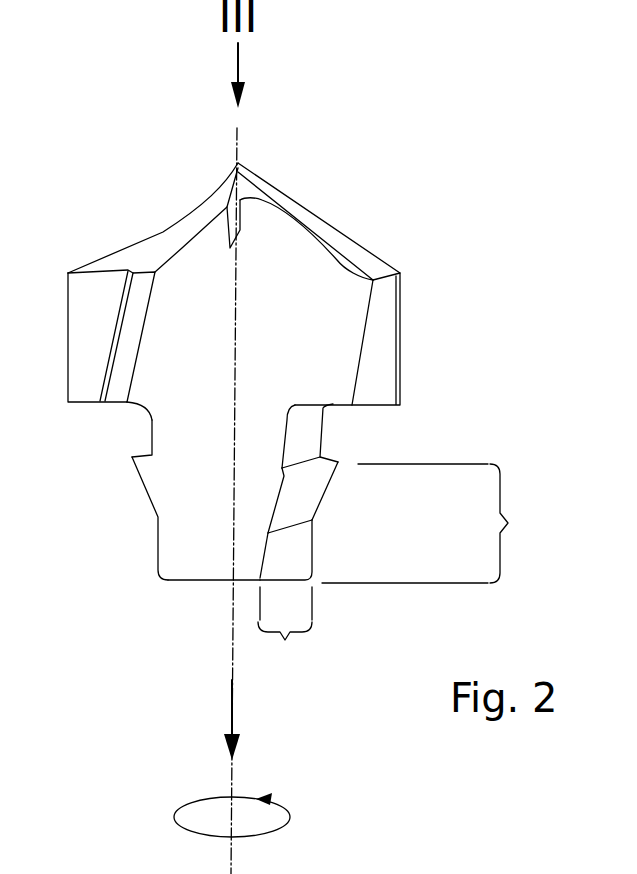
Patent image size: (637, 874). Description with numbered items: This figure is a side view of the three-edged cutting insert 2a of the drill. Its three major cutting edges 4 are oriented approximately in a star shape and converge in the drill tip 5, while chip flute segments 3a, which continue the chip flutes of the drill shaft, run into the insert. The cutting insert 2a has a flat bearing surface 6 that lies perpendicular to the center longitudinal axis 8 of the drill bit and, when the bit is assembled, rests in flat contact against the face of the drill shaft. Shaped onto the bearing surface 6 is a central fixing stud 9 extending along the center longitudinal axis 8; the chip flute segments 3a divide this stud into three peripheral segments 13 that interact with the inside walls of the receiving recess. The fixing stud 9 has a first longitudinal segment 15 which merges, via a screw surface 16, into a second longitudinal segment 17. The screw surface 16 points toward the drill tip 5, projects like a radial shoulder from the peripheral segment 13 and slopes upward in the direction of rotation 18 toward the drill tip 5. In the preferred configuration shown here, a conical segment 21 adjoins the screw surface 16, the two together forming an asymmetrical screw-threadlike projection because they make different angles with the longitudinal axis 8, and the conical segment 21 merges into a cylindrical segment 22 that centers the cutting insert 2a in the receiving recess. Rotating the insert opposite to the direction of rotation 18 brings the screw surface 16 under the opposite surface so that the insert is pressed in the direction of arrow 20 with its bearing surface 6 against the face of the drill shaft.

The cutting insert 2a is at (327, 208).
The chip flute segments 3a is at (305, 367).
The major cutting edges 4 is at (182, 248).
The drill tip 5 is at (239, 161).
The bearing surface 6 is at (127, 404).
The center longitudinal axis 8 is at (235, 323).
The fixing stud 9 is at (322, 538).
The peripheral segments 13 is at (142, 488).
The first longitudinal segment 15 is at (152, 428).
The screw surface 16 is at (323, 453).
The second longitudinal segment 17 is at (436, 523).
The direction of rotation 18 is at (290, 817).
The arrow 20 is at (230, 703).
The conical segment 21 is at (307, 492).
The cylindrical segment 22 is at (292, 547).